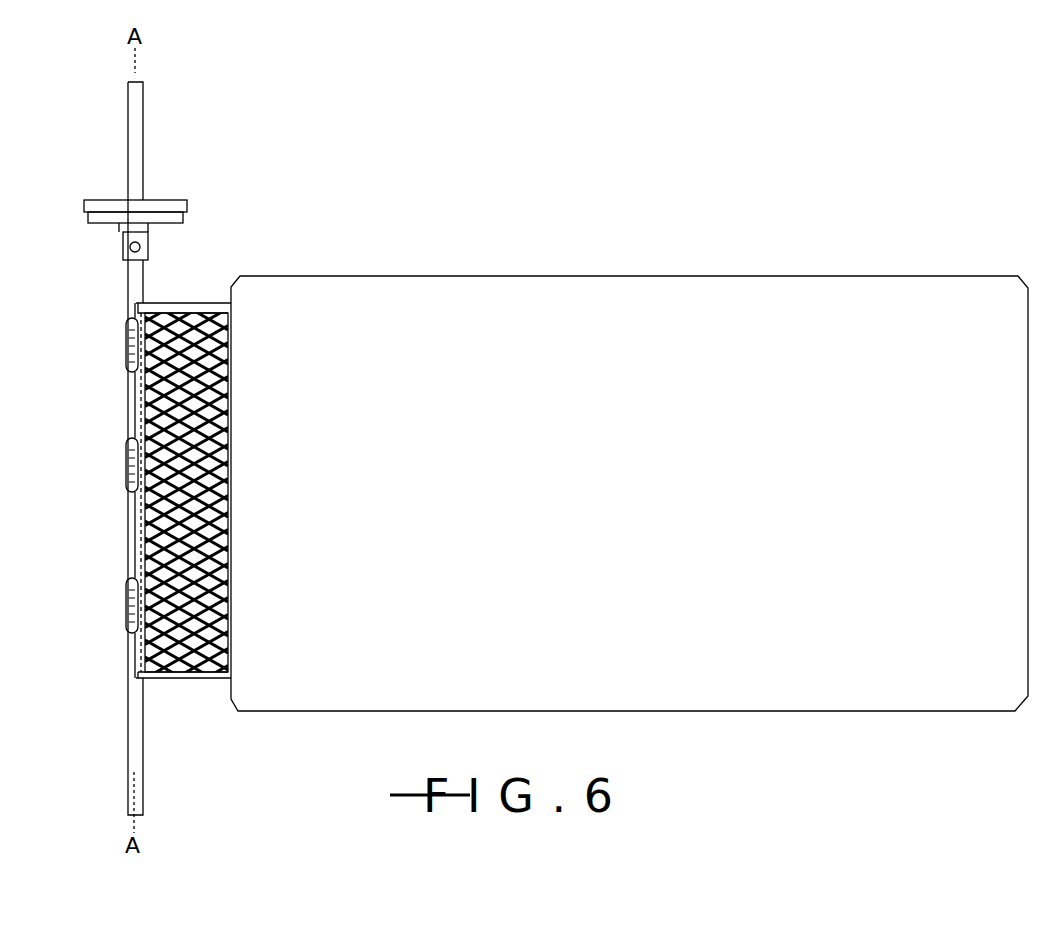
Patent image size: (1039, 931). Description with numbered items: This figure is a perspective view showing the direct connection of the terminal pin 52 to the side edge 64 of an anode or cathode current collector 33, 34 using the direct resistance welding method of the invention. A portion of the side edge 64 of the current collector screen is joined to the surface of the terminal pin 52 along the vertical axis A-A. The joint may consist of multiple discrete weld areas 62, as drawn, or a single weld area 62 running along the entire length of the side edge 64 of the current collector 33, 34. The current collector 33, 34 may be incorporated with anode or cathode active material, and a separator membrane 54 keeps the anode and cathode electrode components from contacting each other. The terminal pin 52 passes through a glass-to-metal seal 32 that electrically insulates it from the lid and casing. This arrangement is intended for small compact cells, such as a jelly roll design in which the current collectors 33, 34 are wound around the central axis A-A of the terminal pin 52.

The terminal pin 52 is at (138, 148).
The glass-to-metal seal 32 is at (147, 228).
The anode current collector 33 is at (178, 303).
The cathode current collector 34 is at (178, 303).
The separator membrane 54 is at (493, 293).
The weld area 62 is at (127, 340).
The side edge 64 is at (142, 520).